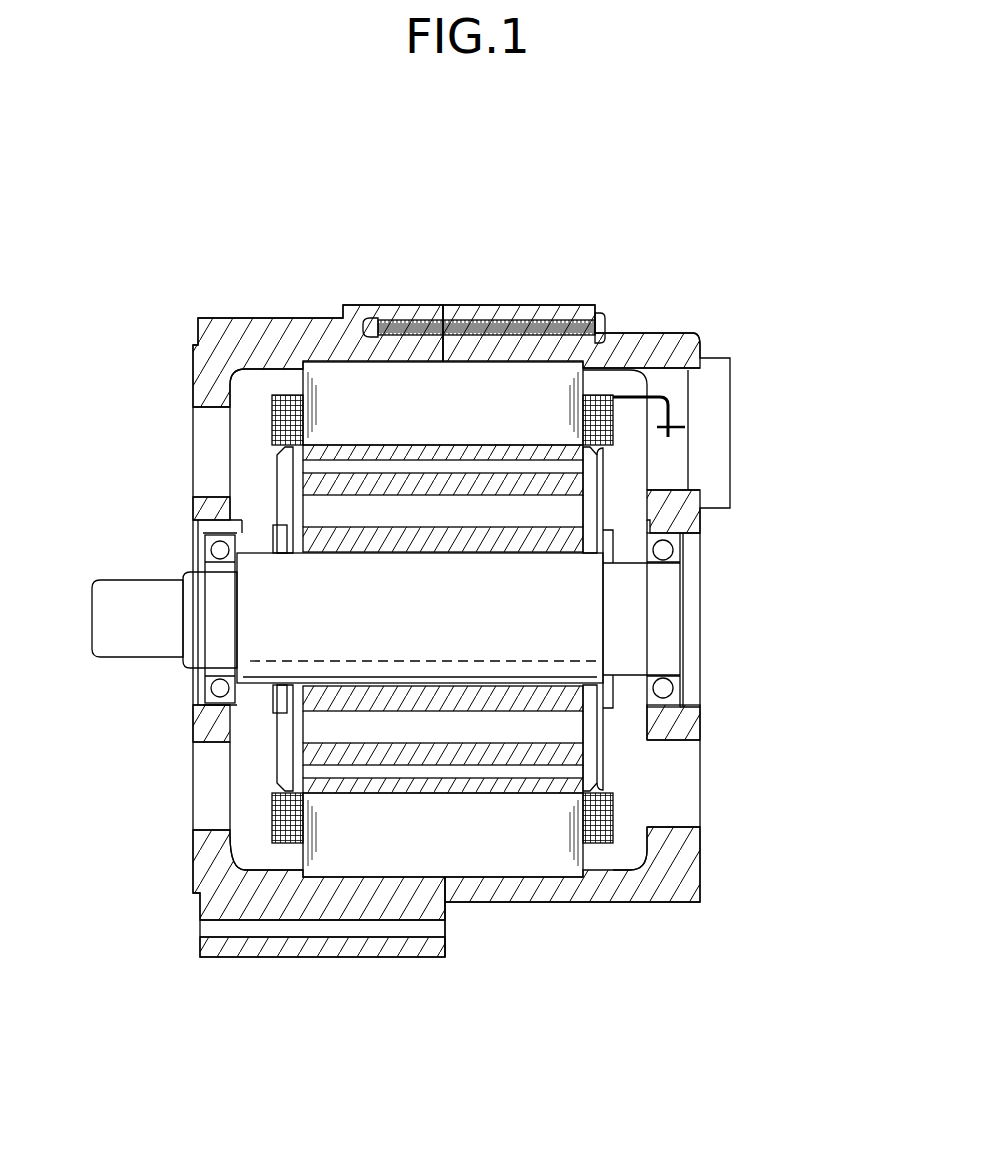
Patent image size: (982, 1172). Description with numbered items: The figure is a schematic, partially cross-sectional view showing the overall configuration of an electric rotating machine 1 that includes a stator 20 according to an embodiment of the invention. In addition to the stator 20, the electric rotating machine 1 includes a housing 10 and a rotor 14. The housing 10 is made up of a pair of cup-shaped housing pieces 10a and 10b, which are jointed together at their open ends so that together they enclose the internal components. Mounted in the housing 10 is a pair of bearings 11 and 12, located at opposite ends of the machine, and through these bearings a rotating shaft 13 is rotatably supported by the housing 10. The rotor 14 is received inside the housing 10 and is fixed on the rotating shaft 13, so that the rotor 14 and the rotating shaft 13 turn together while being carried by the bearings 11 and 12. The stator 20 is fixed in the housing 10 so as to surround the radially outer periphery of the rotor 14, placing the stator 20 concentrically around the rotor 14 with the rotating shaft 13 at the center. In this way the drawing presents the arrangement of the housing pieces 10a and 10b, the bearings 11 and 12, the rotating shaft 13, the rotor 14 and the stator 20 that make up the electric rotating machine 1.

The electric rotating machine 1 is at (782, 243).
The housing 10 is at (498, 175).
The cup-shaped housing piece 10a is at (363, 303).
The cup-shaped housing piece 10b is at (465, 303).
The bearing 11 is at (197, 518).
The bearing 12 is at (667, 533).
The rotating shaft 13 is at (143, 638).
The rotor 14 is at (570, 483).
The stator 20 is at (558, 393).